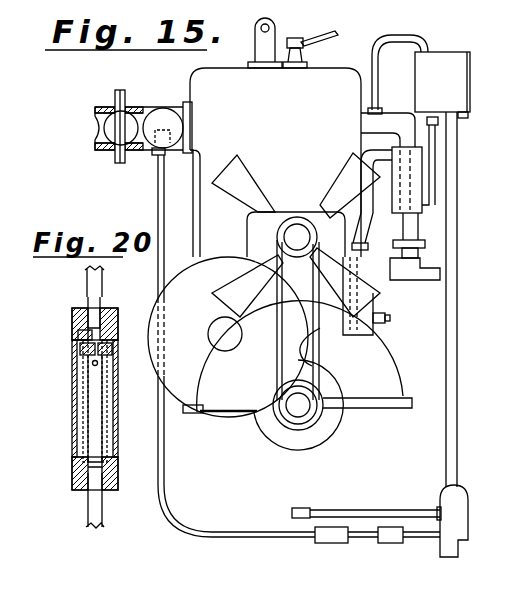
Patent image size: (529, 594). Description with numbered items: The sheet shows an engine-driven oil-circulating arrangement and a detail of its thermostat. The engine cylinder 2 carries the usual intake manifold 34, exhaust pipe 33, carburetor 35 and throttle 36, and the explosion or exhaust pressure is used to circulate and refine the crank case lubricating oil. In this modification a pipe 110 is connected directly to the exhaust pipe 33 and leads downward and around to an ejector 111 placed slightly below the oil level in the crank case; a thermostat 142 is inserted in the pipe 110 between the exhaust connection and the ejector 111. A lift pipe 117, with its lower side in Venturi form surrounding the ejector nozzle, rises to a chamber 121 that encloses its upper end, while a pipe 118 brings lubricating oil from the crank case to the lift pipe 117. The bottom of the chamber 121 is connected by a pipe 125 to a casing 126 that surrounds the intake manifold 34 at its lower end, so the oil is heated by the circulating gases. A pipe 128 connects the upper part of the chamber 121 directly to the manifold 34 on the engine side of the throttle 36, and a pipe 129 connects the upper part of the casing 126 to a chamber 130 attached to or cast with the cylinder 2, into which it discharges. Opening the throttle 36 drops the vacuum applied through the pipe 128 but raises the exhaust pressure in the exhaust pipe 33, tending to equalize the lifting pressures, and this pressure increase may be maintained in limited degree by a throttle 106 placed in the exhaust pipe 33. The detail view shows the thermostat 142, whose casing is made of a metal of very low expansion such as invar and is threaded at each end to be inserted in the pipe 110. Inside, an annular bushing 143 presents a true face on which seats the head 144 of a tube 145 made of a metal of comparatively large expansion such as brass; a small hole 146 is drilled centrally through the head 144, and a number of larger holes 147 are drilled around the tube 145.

In FIG. 15, the engine cylinder 2 is at (325, 78).
In FIG. 15, the exhaust pipe 33 is at (142, 110).
In FIG. 15, the intake manifold 34 is at (393, 113).
In FIG. 15, the carburetor 35 is at (440, 275).
In FIG. 15, the throttle 36 is at (418, 255).
In FIG. 15, the throttle 106 is at (110, 128).
In FIG. 15, the pipe 110 is at (158, 207).
In FIG. 20, the pipe 110 is at (101, 283).
In FIG. 15, the ejector 111 is at (462, 508).
In FIG. 15, the lift pipe 117 is at (451, 156).
In FIG. 15, the pipe 118 is at (388, 516).
In FIG. 15, the chamber 121 is at (471, 71).
In FIG. 15, the pipe 125 is at (437, 172).
In FIG. 15, the casing 126 is at (418, 190).
In FIG. 15, the pipe 128 is at (425, 40).
In FIG. 15, the pipe 129 is at (366, 247).
In FIG. 15, the chamber 130 is at (374, 288).
In FIG. 15, the thermostat 142 is at (335, 543).
In FIG. 20, the thermostat 142 is at (118, 401).
In FIG. 20, the annular bushing 143 is at (78, 333).
In FIG. 20, the head 144 is at (112, 352).
In FIG. 20, the tube 145 is at (108, 441).
In FIG. 20, the small hole 146 is at (80, 352).
In FIG. 20, the larger holes 147 is at (92, 364).